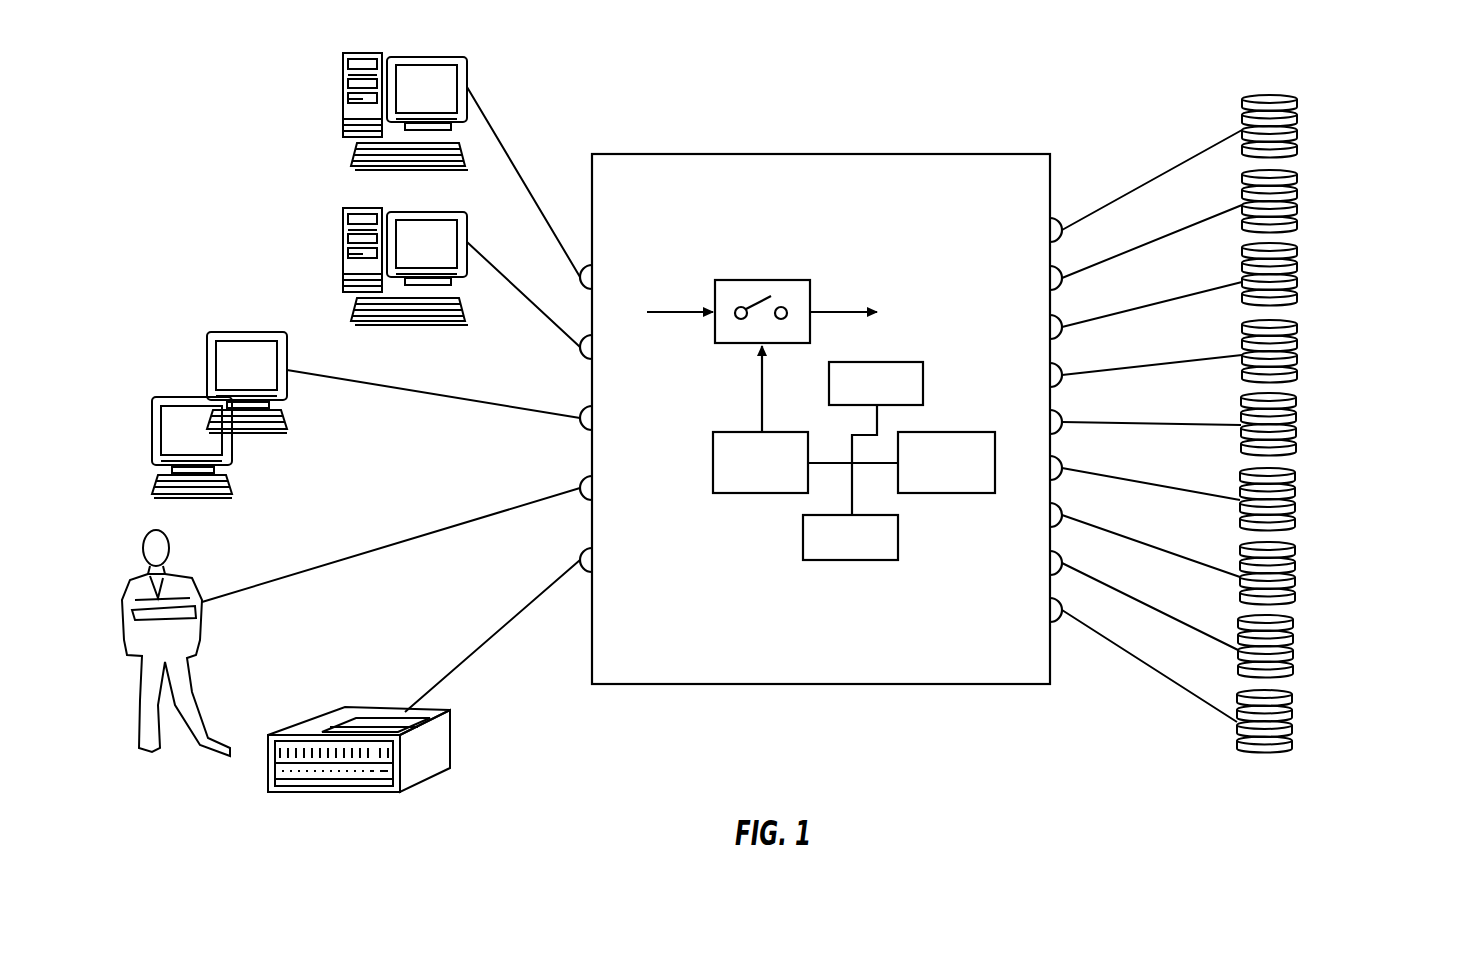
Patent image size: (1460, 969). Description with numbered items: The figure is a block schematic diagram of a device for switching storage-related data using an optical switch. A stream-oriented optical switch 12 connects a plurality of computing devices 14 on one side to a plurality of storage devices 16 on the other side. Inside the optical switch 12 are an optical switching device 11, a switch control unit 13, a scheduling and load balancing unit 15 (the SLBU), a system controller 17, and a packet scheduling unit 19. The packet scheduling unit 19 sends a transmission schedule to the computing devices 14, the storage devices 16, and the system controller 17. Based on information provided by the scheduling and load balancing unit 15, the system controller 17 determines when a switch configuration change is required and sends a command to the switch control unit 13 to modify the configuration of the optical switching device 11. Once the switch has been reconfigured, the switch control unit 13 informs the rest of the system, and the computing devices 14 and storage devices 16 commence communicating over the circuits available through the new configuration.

The optical switching device 11 is at (742, 280).
The stream-oriented optical switch 12 is at (858, 660).
The switch control unit 13 is at (742, 432).
The computing devices 14 is at (226, 114).
The scheduling and load balancing unit 15 is at (948, 432).
The storage devices 16 is at (1341, 121).
The system controller 17 is at (850, 560).
The packet scheduling unit 19 is at (879, 362).